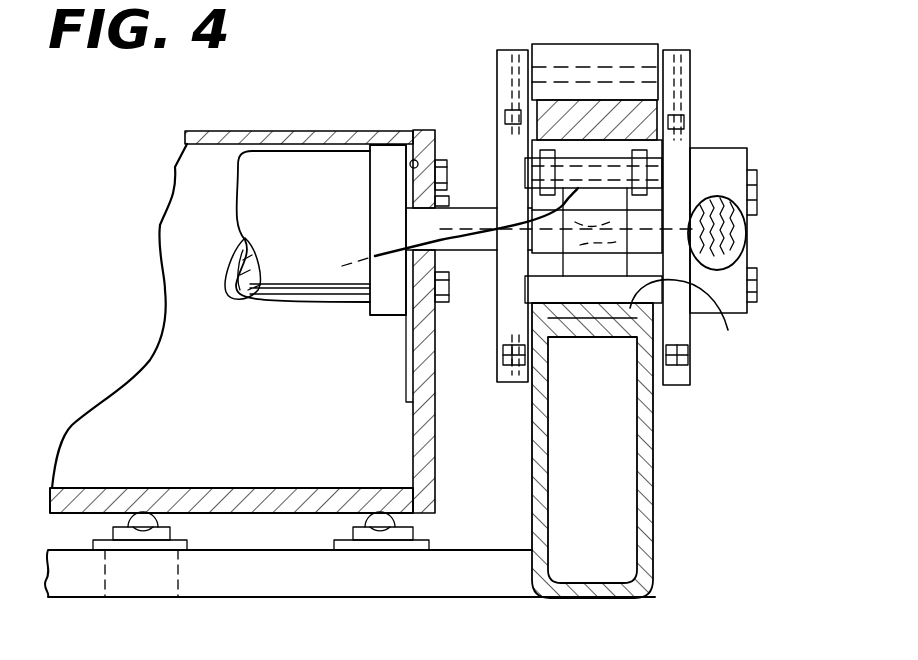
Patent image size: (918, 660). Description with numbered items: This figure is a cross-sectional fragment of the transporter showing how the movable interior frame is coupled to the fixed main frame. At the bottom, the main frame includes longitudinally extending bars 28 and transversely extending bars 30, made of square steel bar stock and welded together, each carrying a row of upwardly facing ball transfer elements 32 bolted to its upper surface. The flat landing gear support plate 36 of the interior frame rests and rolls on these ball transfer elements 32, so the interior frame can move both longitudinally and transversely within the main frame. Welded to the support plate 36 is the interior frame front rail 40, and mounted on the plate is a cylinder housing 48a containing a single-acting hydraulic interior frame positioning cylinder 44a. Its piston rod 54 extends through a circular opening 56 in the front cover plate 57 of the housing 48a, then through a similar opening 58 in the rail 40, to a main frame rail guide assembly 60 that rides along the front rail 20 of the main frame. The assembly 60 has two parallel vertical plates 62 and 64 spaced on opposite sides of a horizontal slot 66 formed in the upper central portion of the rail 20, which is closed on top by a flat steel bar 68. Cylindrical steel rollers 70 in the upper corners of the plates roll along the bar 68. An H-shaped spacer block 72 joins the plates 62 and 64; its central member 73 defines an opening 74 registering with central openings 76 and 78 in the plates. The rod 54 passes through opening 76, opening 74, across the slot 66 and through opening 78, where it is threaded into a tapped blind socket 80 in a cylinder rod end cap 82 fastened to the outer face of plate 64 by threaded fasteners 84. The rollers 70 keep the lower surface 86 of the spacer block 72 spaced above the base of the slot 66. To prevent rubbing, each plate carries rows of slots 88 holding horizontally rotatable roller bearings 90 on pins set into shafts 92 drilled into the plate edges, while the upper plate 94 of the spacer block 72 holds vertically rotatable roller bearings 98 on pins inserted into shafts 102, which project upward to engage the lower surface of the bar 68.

The front rail 20 is at (635, 497).
The longitudinally extending bars 28 is at (255, 600).
The transversely extending bars 30 is at (100, 566).
The ball transfer elements 32 is at (360, 532).
The landing gear support plate 36 is at (258, 488).
The front rail of interior frame 40 is at (432, 463).
The interior frame positioning cylinder 44a is at (337, 292).
The cylinder housing 48a is at (192, 131).
The piston rod 54 is at (445, 200).
The circular opening 56 is at (412, 166).
The front cover plate 57 is at (406, 365).
The opening 58 is at (425, 227).
The main frame rail guide assembly 60 is at (700, 78).
The plate 62 is at (497, 318).
The plate 64 is at (690, 388).
The slot 66 is at (679, 325).
The bar 68 is at (545, 105).
The rollers 70 is at (556, 50).
The spacer block 72 is at (545, 290).
The central member 73 is at (603, 268).
The opening 74 is at (758, 220).
The central opening 76 is at (499, 237).
The central opening 78 is at (715, 180).
The tapped blind socket 80 is at (750, 243).
The cylinder rod end cap 82 is at (745, 312).
The threaded fasteners 84 is at (757, 165).
The lower surface 86 is at (583, 300).
The slots 88 is at (497, 360).
The roller bearings 90 is at (650, 313).
The shafts 92 is at (497, 55).
The upper plate 94 is at (583, 165).
The roller bearing 98 is at (650, 150).
The shafts 102 is at (450, 206).